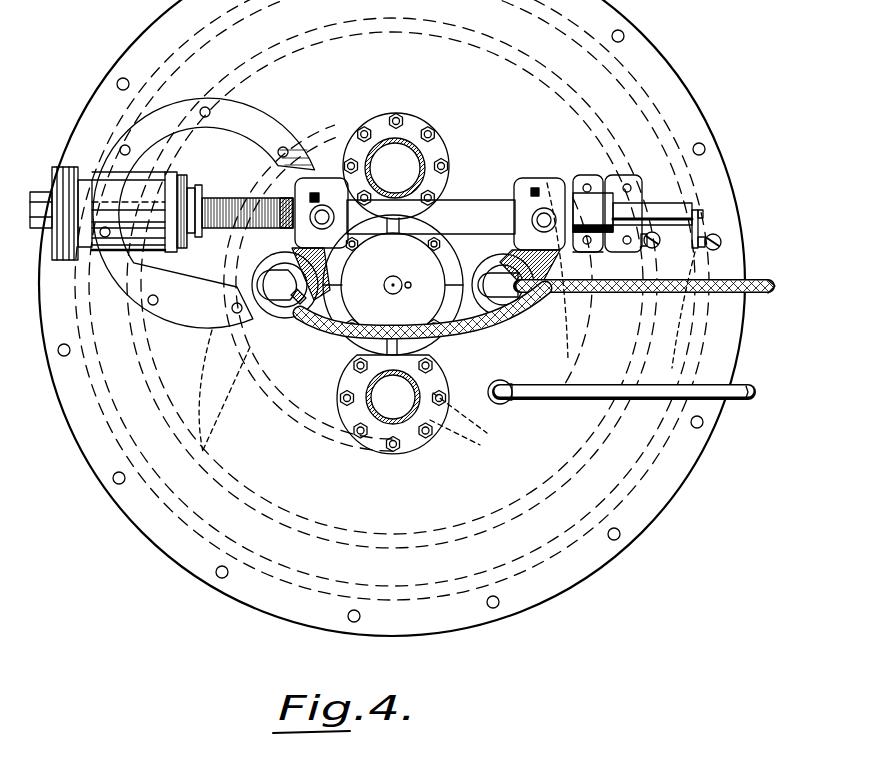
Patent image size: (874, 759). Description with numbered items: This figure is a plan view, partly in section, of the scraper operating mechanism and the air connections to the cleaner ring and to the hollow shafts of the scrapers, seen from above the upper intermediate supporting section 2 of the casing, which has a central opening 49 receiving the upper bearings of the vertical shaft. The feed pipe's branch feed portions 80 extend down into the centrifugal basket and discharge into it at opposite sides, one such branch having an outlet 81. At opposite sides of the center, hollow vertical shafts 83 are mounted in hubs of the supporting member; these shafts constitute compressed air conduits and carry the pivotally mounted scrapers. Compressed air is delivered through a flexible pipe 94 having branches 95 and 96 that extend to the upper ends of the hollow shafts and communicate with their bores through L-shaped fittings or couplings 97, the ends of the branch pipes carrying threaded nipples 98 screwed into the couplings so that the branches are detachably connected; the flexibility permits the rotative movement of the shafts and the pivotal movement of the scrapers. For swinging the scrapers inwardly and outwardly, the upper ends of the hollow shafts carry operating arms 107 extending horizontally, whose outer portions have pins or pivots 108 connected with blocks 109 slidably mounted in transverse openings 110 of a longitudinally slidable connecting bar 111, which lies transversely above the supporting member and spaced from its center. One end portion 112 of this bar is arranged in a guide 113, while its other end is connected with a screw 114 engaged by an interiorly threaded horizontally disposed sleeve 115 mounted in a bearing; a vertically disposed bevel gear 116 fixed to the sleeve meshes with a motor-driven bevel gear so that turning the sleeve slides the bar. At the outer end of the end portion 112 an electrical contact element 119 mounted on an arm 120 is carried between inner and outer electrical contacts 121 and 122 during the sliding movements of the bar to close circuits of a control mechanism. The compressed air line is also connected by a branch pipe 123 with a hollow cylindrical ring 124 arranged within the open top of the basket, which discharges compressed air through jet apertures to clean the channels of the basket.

The upper intermediate section 2 is at (392, 318).
The central opening 49 is at (440, 264).
The branch feed portions 80 is at (405, 152).
The outlet 81 is at (345, 130).
The vertical shafts 83 is at (262, 288).
The flexible pipe 94 is at (745, 296).
The branch 95 is at (586, 254).
The branch 96 is at (478, 333).
The L-shaped fittings or couplings 97 is at (282, 278).
The threaded nipples 98 is at (296, 318).
The operating arms 107 is at (292, 236).
The pins or pivots 108 is at (535, 200).
The blocks 109 is at (350, 262).
The transverse openings 110 is at (316, 192).
The connecting bar 111 is at (424, 238).
The end portion 112 is at (675, 204).
The guide 113 is at (604, 221).
The screw 114 is at (224, 204).
The sleeve 115 is at (170, 180).
The bevel gear 116 is at (183, 180).
The electrical contact element 119 is at (684, 264).
The arm 120 is at (700, 222).
The inner electrical contact 121 is at (636, 250).
The outer electrical contact 122 is at (715, 251).
The branch pipe 123 is at (588, 399).
The hollow cylindrical ring 124 is at (522, 364).